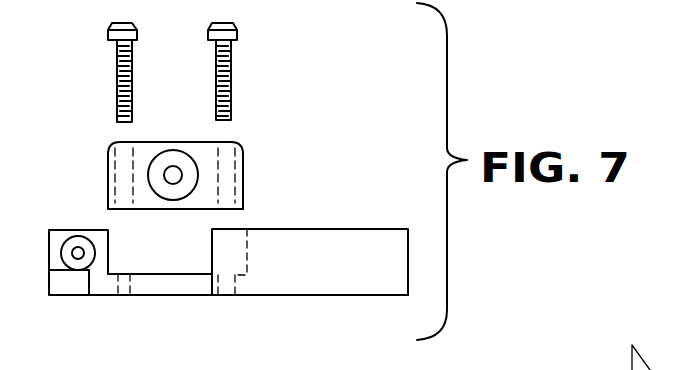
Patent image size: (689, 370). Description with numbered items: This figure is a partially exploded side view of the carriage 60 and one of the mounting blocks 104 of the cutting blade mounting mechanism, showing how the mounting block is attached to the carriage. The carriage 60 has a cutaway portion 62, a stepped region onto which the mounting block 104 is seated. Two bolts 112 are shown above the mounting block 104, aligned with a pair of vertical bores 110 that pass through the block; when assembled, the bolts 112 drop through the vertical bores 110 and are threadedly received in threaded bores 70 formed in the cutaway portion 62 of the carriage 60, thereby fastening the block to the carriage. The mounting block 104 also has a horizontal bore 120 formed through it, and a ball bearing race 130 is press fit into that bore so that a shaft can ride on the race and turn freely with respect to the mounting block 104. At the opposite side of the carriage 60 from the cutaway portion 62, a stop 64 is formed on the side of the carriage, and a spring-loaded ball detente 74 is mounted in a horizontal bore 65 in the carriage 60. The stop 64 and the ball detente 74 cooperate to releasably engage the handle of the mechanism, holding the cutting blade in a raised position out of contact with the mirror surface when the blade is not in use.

The carriage 60 is at (362, 229).
The cutaway portion 62 is at (174, 268).
The stop 64 is at (72, 285).
The horizontal bore 65 is at (62, 230).
The threaded bores 70 is at (125, 300).
The spring-loaded ball detente 74 is at (79, 252).
The mounting block 104 is at (245, 190).
The vertical bores 110 is at (108, 168).
The bolts 112 is at (208, 30).
The horizontal bore 120 is at (158, 152).
The ball bearing race 130 is at (184, 160).